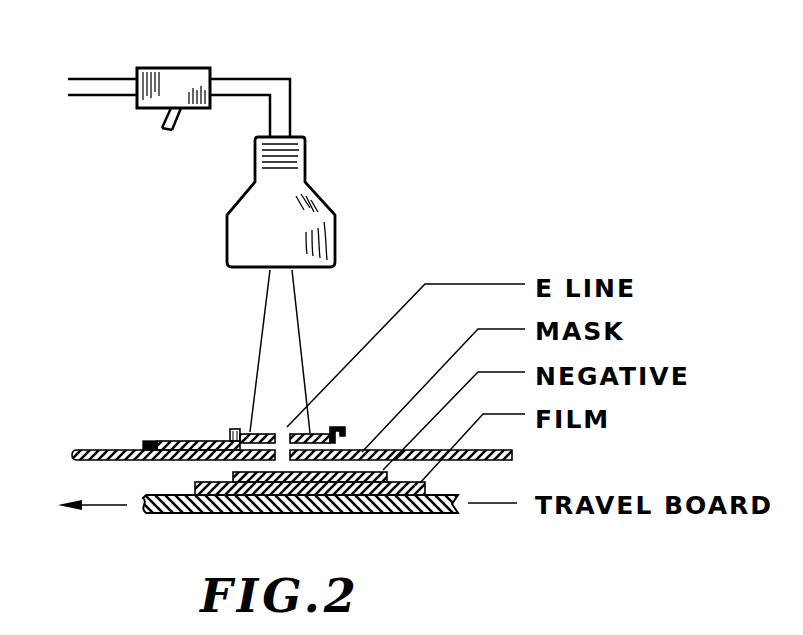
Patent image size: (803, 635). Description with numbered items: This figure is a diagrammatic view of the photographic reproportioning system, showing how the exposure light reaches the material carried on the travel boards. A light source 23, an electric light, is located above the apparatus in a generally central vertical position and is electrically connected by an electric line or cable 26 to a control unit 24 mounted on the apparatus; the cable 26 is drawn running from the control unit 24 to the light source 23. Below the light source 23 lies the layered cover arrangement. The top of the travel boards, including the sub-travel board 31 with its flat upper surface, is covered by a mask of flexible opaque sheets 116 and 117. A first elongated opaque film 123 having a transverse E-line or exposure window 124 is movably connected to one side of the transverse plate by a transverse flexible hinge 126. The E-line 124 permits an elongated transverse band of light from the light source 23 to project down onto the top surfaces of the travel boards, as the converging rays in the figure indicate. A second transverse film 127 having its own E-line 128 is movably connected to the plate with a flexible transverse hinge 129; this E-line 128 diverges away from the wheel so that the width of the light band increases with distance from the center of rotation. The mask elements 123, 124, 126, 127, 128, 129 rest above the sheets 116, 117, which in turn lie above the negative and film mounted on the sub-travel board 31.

The light source 23 is at (306, 184).
The control unit 24 is at (172, 67).
The electric line or cable 26 is at (63, 90).
The sub-travel board 31 is at (417, 507).
The flexible opaque sheet 116 is at (92, 462).
The flexible opaque sheet 117 is at (483, 461).
The first elongated opaque film 123 is at (309, 430).
The E-line or exposure window 124 is at (276, 435).
The flexible hinge 126 is at (334, 436).
The second transverse film 127 is at (145, 444).
The E-line 128 is at (190, 441).
The flexible transverse hinge 129 is at (232, 430).